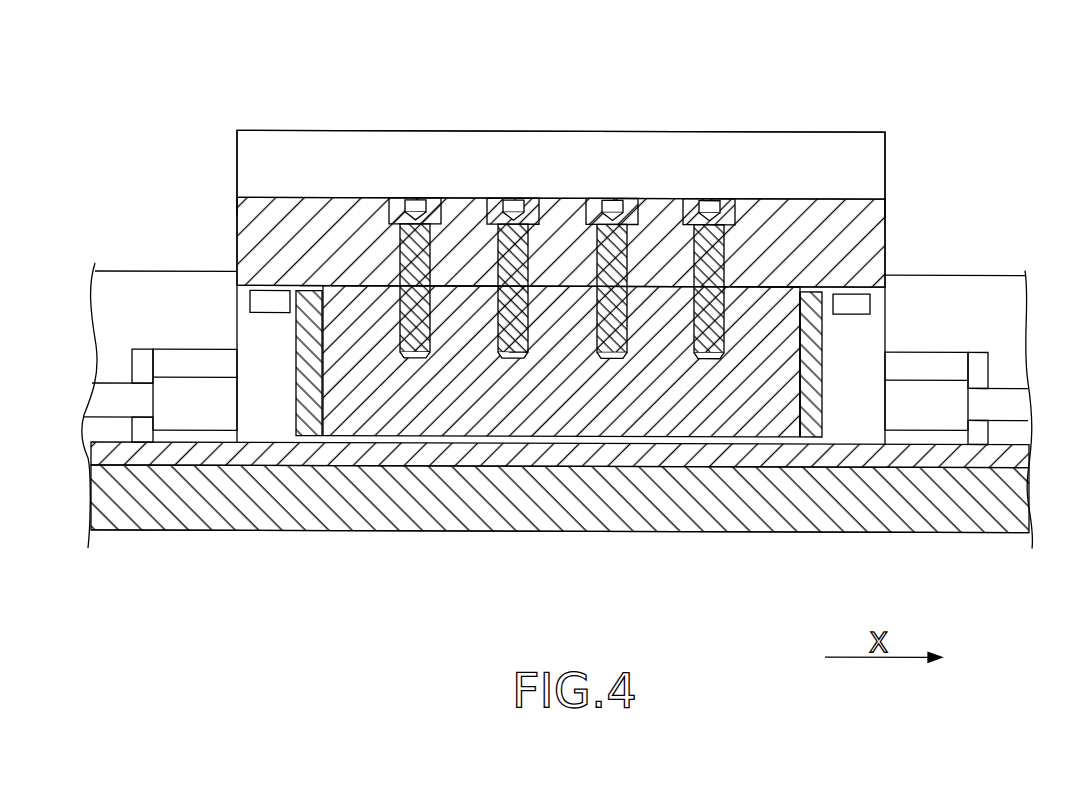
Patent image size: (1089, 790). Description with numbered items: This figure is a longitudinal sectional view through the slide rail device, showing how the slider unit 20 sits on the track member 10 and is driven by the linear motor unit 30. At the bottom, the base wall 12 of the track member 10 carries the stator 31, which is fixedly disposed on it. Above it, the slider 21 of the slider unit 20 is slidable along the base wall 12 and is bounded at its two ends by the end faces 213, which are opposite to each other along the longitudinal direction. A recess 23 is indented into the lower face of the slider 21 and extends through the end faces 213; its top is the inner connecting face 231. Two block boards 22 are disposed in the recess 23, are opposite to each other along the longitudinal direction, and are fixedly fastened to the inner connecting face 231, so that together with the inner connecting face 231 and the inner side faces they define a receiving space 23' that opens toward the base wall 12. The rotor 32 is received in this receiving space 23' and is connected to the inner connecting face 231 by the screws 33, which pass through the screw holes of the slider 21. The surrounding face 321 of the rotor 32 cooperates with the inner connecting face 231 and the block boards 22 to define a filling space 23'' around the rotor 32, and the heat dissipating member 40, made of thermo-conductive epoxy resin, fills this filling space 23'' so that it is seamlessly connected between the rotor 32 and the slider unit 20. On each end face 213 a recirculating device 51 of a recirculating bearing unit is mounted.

The track member 10 is at (97, 497).
The base wall 12 is at (133, 505).
The slider unit 20 is at (270, 128).
The slider 21 is at (420, 140).
The block boards 22 is at (296, 400).
The recess 23 is at (561, 210).
The receiving space 23' is at (362, 186).
The filling space 23'' is at (319, 178).
The end faces 213 is at (237, 206).
The inner connecting face 231 is at (782, 290).
The linear motor unit 30 is at (293, 456).
The stator 31 is at (600, 456).
The rotor 32 is at (460, 405).
The surrounding face 321 is at (800, 352).
The screws 33 is at (592, 198).
The heat dissipating member 40 is at (318, 385).
The recirculating devices 51 is at (186, 353).